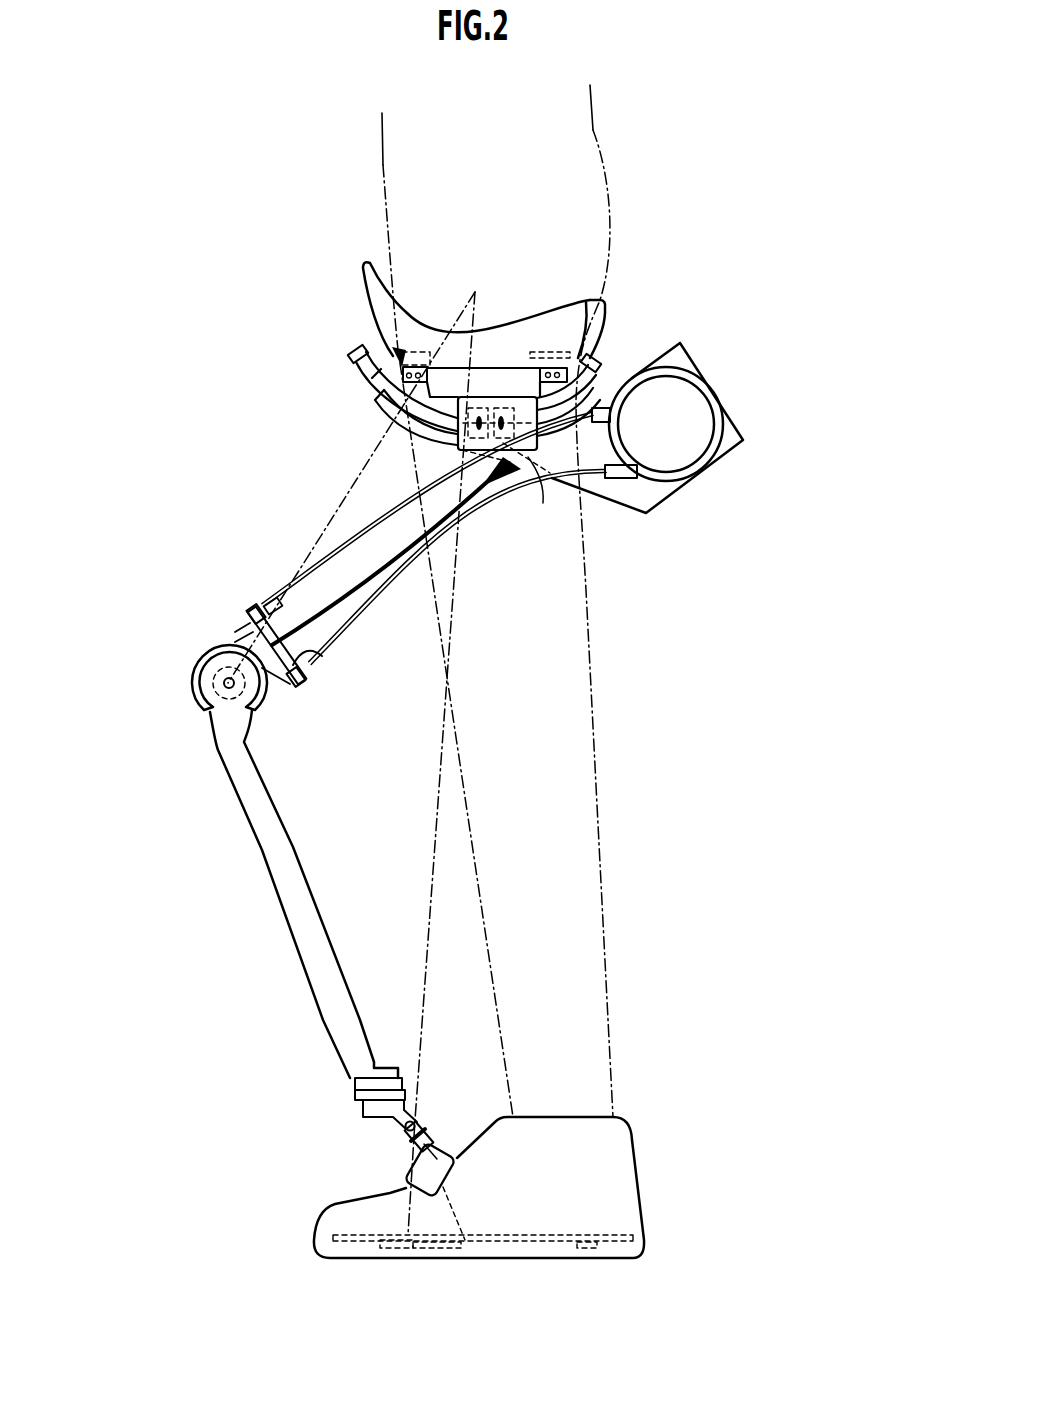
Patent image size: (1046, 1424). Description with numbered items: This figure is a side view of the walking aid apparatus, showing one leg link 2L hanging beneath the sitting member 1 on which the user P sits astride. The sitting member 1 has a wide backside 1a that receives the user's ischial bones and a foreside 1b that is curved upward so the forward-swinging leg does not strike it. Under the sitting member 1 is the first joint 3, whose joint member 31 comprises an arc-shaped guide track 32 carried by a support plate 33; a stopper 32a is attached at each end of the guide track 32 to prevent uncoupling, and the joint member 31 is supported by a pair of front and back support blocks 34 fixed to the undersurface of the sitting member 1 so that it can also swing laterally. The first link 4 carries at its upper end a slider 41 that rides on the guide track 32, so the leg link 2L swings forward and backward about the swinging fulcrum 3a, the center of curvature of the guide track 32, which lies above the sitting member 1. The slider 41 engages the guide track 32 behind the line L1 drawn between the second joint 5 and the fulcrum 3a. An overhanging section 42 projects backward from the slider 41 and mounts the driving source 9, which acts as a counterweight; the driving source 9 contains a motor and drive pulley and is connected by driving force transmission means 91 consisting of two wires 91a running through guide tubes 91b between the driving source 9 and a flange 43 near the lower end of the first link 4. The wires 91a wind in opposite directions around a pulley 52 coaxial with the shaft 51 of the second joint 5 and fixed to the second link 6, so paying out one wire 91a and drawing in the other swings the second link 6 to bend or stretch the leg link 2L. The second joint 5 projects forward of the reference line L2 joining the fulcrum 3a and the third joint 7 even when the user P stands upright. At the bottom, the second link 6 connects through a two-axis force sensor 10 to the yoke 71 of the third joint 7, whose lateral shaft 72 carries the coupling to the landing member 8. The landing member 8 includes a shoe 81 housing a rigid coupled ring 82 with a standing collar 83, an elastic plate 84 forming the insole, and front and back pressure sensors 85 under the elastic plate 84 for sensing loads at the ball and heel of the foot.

The sitting member 1 is at (480, 285).
The backside 1a is at (608, 306).
The foreside 1b is at (360, 263).
The first joint 3 is at (457, 347).
The forward/backward swinging fulcrum 3a is at (476, 291).
The joint member 31 is at (444, 414).
The guide track 32 is at (405, 396).
The support plate 33 is at (415, 428).
The stopper 32a is at (355, 368).
The support block 34 is at (413, 350).
The first link 4 is at (367, 572).
The slider 41 is at (585, 519).
The overhanging section 42 is at (652, 497).
The flange 43 is at (318, 652).
The second joint 5 is at (196, 697).
The shaft 51 is at (210, 714).
The pulley 52 is at (192, 690).
The second link 6 is at (273, 852).
The third joint 7 is at (406, 1085).
The yoke 71 is at (412, 1121).
The shaft 72 is at (418, 1133).
The landing member 8 is at (511, 1214).
The shoe 81 is at (638, 1216).
The coupled ring 82 is at (407, 1167).
The collar 83 is at (432, 1148).
The elastic plate 84 is at (507, 1243).
The pressure sensor 85 is at (397, 1248).
The driving source 9 is at (705, 403).
The driving force transmission means 91 is at (498, 497).
The wire 91a is at (245, 625).
The guide tube 91b is at (515, 480).
The 2-axis force sensor 10 is at (352, 1095).
The leg link 2L is at (236, 894).
The line L1 is at (331, 520).
The reference line L2 is at (437, 808).
The user P is at (598, 132).